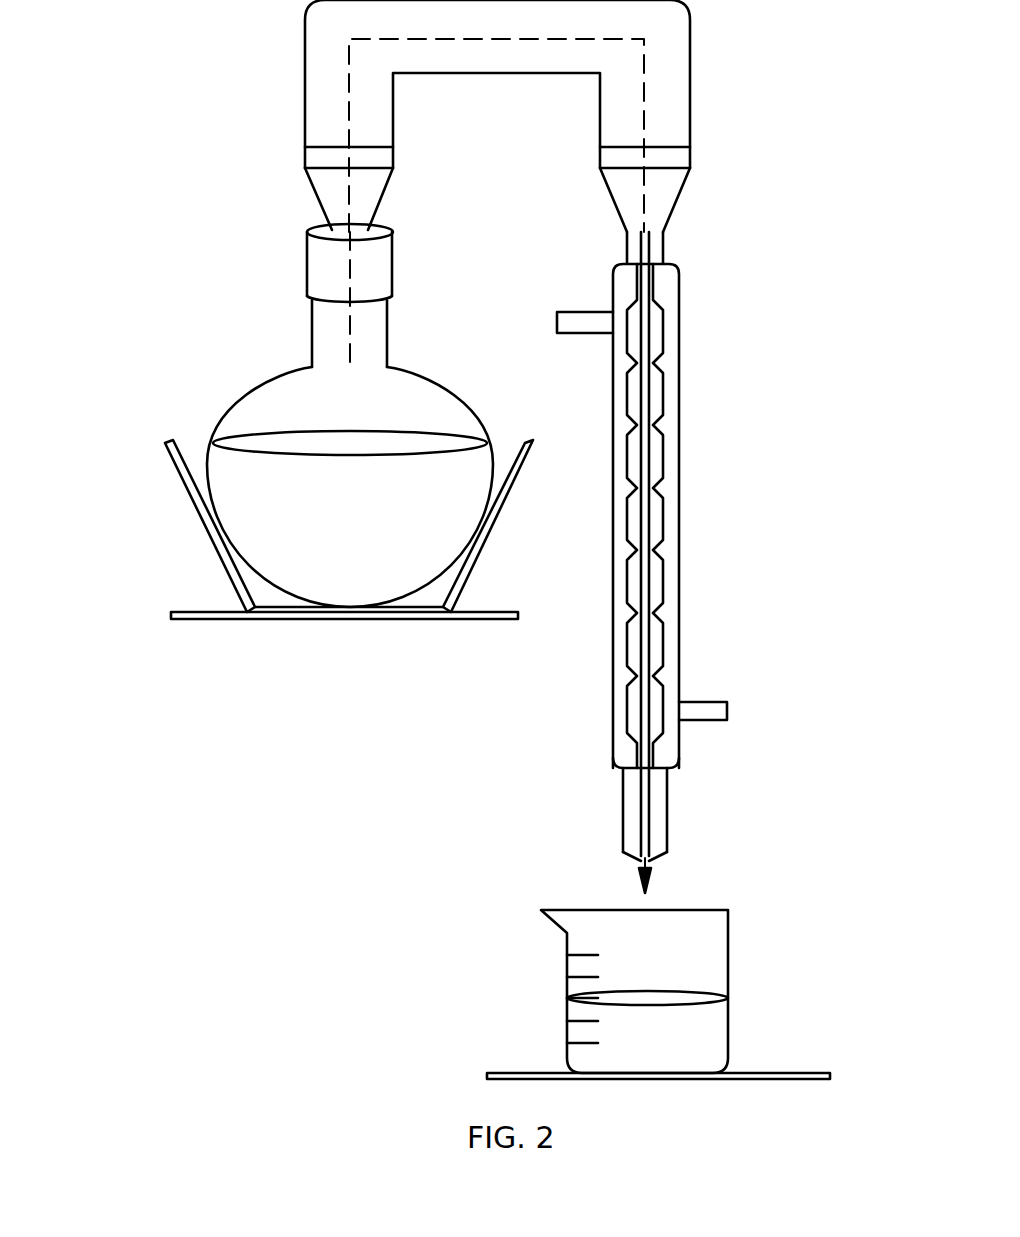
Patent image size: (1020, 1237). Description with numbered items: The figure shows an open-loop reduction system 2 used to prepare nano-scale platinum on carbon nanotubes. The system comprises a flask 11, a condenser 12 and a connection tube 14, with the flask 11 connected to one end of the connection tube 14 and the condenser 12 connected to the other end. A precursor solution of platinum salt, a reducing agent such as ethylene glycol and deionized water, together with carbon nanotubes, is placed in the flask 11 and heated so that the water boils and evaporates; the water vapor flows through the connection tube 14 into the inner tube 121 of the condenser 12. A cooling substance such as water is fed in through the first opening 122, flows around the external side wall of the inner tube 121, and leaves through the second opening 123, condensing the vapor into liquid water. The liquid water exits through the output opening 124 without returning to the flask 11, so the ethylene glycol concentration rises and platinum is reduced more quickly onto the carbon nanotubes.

The open-loop reduction system 2 is at (187, 95).
The flask 11 is at (268, 402).
The condenser 12 is at (672, 556).
The connection tube 14 is at (690, 67).
The inner tube 121 is at (663, 525).
The first opening 122 is at (718, 700).
The second opening 123 is at (562, 312).
The output opening 124 is at (657, 858).